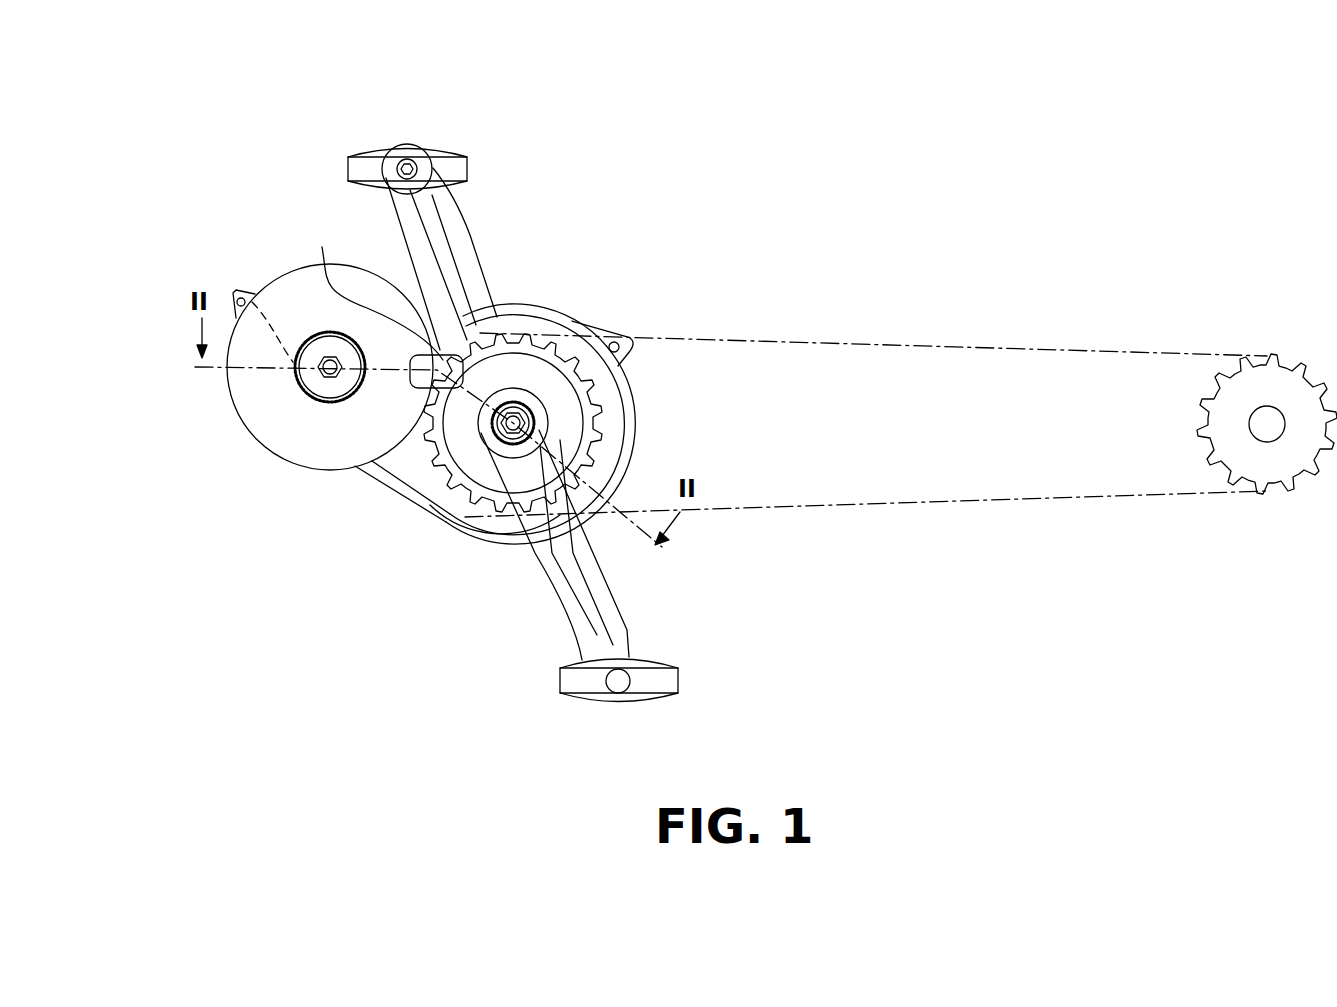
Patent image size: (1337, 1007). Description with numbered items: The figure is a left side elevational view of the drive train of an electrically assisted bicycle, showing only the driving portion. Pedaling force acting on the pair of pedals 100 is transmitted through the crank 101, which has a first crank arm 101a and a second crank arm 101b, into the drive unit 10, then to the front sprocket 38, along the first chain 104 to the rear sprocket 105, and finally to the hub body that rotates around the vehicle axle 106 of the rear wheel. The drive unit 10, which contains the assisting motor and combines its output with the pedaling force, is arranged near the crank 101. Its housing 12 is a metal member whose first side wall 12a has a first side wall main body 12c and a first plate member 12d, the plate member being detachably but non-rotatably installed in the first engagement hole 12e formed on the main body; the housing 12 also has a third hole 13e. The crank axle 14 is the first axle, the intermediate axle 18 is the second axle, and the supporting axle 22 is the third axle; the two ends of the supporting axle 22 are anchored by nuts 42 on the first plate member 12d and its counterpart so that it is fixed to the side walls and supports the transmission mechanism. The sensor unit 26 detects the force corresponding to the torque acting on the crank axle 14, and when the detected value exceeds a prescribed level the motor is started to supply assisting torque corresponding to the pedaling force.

The drive unit 10 is at (568, 295).
The housing 12 is at (260, 290).
The first side wall 12a is at (261, 402).
The first side wall main body 12c is at (240, 370).
The first plate member 12d is at (320, 402).
The first engagement hole 12e is at (233, 295).
The third hole 13e is at (377, 520).
The crank axle 14 is at (540, 425).
The intermediate axle 18 is at (413, 313).
The supporting axle 22 is at (303, 397).
The sensor unit 26 is at (381, 301).
The front sprocket 38 is at (485, 545).
The nuts 42 is at (332, 382).
The pedals 100 is at (372, 150).
The crank 101 is at (580, 433).
The first crank arm 101a is at (615, 600).
The second crank arm 101b is at (440, 196).
The first chain 104 is at (873, 505).
The rear sprocket 105 is at (1237, 500).
The vehicle axle 106 is at (1267, 408).